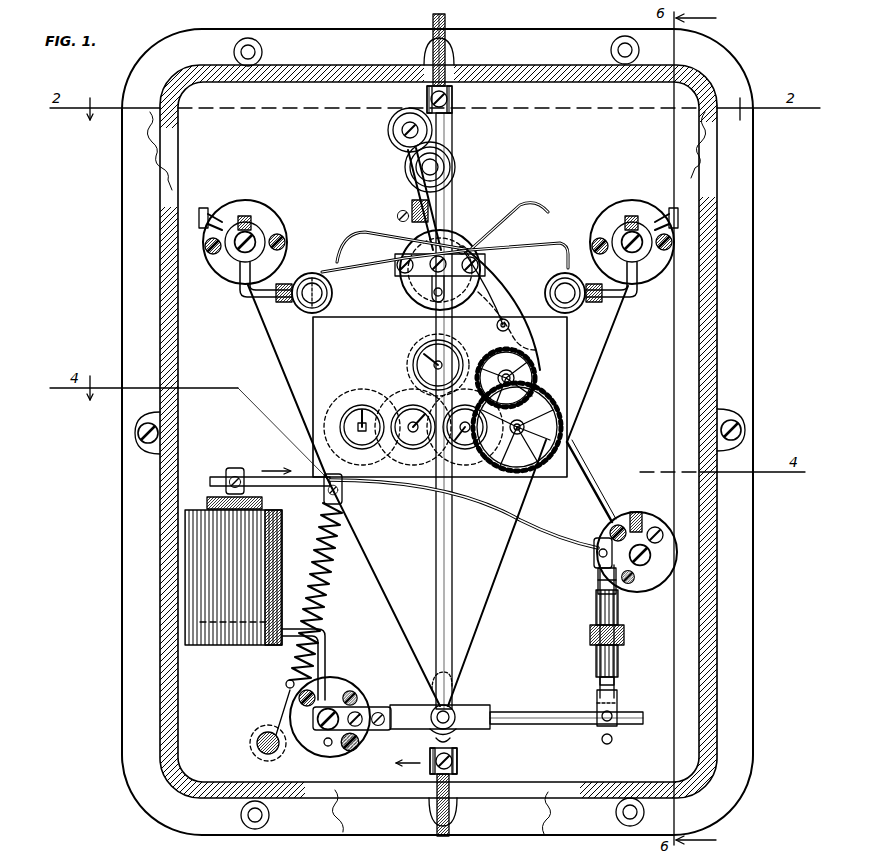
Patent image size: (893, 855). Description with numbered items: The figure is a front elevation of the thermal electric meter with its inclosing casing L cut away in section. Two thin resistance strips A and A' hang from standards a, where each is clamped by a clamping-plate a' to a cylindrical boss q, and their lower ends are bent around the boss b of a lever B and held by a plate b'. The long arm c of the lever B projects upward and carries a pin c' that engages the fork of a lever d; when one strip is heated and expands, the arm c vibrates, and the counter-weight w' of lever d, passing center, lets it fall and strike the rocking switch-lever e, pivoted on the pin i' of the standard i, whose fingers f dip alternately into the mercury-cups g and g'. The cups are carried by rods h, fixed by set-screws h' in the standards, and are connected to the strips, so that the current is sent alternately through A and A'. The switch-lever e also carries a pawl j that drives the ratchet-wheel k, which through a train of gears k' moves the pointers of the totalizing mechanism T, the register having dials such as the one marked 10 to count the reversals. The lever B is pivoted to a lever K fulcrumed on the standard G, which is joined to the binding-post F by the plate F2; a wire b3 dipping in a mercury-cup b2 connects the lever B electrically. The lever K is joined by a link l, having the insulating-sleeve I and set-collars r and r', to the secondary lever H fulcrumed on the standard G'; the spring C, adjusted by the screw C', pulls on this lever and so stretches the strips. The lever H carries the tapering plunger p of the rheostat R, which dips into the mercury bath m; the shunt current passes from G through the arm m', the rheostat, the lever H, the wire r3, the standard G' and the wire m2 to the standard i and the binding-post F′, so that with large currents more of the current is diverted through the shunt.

The casing L is at (437, 432).
The binding-post F′ is at (452, 97).
The long arm of lever B c is at (444, 411).
The counter-weight w′ is at (396, 130).
The standard i is at (440, 270).
The pivotal pin i′ is at (420, 295).
The pin c′ is at (416, 317).
The pawl j is at (499, 300).
The lever d is at (442, 227).
The rocking lever e is at (452, 296).
The cylindrical boss q is at (252, 228).
The standard a is at (232, 252).
The clamping-plate a′ is at (208, 256).
The set-screws h′ is at (262, 258).
The supporting-rod h is at (250, 292).
The finger f is at (439, 282).
The mercury-cup g is at (317, 293).
The mercury-cup g' is at (557, 293).
The totalizing mechanism T is at (440, 397).
The counter dials 10 is at (413, 393).
The ratchet-wheel k is at (517, 378).
The train of gears k' is at (479, 427).
The plunger p is at (262, 503).
The secondary lever H is at (461, 511).
The rheostat R is at (240, 592).
The mercury bath m is at (235, 609).
The arm m' is at (319, 663).
The spring C is at (314, 595).
The metal strip A is at (383, 592).
The metal strip A' is at (497, 573).
The lever B is at (463, 645).
The wire or rod b3 is at (432, 680).
The mercury-cup b2 is at (456, 684).
The standard G is at (340, 717).
The adjusting-screw C' is at (267, 725).
The metal strip or plate F2 is at (359, 764).
The lever K is at (475, 706).
The boss b is at (429, 728).
The plate b' is at (468, 740).
The binding-post F is at (457, 760).
The standard G' is at (637, 552).
The wire m2 is at (593, 481).
The set-collar r is at (594, 547).
The wire r3 is at (622, 522).
The set-collar r' is at (636, 624).
The insulating-sleeve I is at (611, 631).
The link l is at (598, 582).